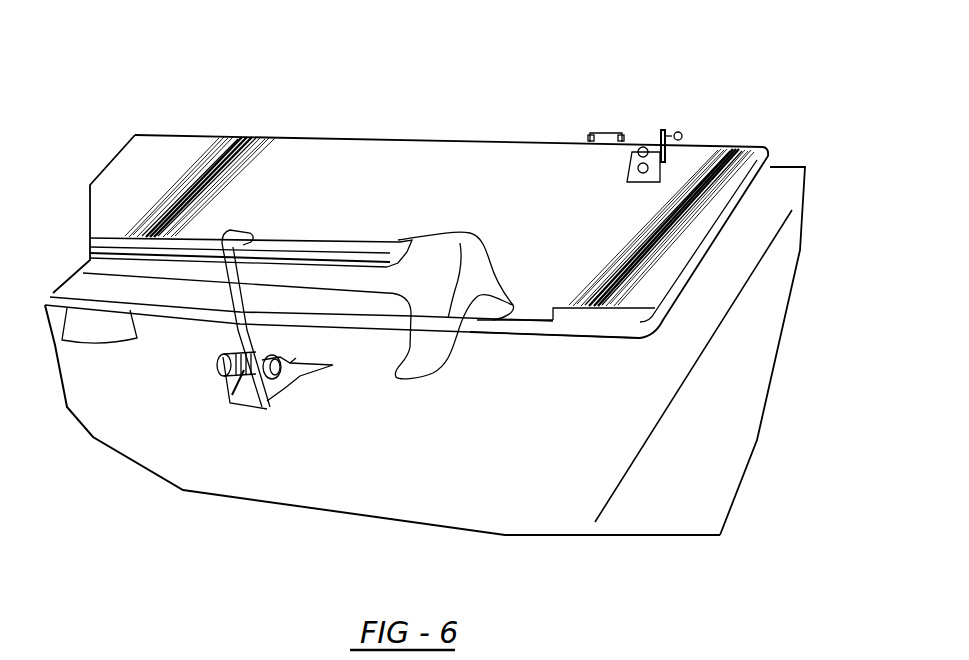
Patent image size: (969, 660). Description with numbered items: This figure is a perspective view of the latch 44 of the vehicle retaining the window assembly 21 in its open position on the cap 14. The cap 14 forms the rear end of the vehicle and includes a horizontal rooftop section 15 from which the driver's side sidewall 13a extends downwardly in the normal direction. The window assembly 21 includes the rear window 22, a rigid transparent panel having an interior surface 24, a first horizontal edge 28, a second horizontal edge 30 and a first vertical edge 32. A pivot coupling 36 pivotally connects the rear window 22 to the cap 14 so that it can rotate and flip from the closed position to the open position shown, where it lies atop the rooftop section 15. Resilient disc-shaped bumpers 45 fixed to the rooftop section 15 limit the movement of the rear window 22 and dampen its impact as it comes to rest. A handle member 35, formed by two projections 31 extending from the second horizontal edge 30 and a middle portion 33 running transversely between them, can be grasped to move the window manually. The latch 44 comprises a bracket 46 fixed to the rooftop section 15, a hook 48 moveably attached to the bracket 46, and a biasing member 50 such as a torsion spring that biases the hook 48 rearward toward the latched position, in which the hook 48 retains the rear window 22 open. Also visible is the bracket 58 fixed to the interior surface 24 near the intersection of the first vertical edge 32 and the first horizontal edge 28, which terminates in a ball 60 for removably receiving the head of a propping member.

The driver's side sidewall 13a is at (743, 380).
The cap 14 is at (622, 428).
The rooftop section 15 is at (438, 492).
The window assembly 21 is at (165, 150).
The rear window 22 is at (343, 170).
The interior surface 24 is at (465, 207).
The first horizontal edge 28 is at (440, 140).
The second horizontal edge 30 is at (538, 327).
The projections 31 is at (425, 343).
The first vertical edge 32 is at (745, 218).
The middle portion 33 is at (163, 270).
The handle member 35 is at (330, 272).
The pivot coupling 36 is at (608, 127).
The latch 44 is at (264, 354).
The bumpers 45 is at (97, 340).
The bracket 46 is at (277, 388).
The hook 48 is at (247, 325).
The biasing member 50 is at (233, 376).
The bracket 58 is at (637, 183).
The ball 60 is at (682, 135).